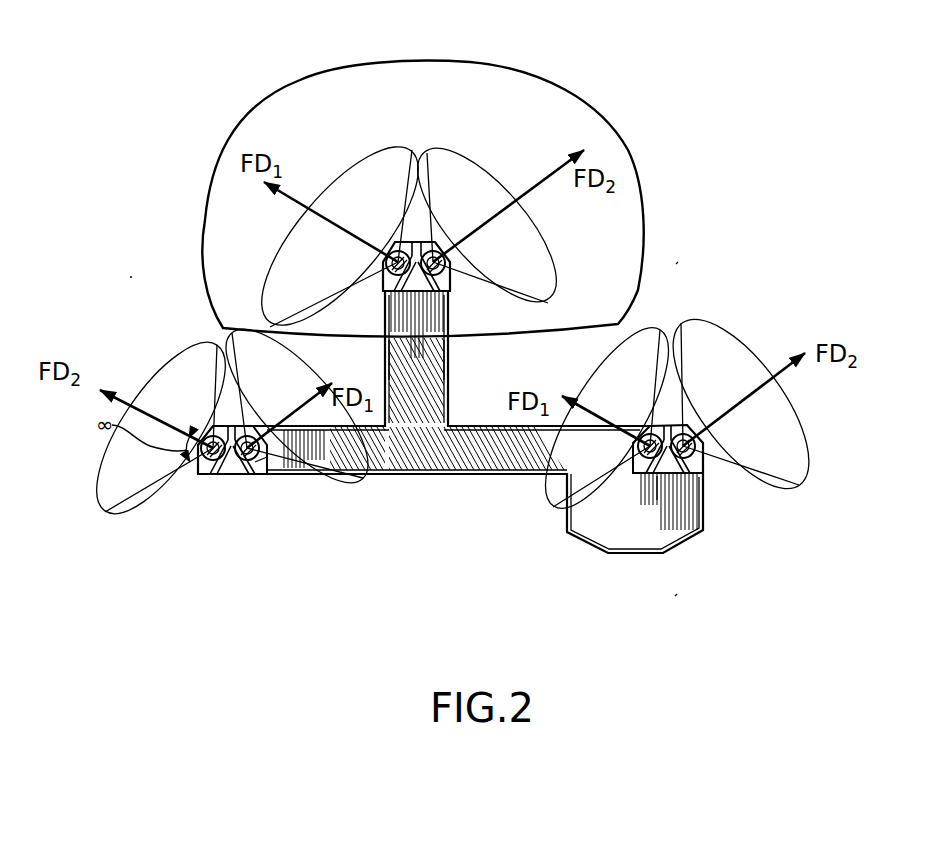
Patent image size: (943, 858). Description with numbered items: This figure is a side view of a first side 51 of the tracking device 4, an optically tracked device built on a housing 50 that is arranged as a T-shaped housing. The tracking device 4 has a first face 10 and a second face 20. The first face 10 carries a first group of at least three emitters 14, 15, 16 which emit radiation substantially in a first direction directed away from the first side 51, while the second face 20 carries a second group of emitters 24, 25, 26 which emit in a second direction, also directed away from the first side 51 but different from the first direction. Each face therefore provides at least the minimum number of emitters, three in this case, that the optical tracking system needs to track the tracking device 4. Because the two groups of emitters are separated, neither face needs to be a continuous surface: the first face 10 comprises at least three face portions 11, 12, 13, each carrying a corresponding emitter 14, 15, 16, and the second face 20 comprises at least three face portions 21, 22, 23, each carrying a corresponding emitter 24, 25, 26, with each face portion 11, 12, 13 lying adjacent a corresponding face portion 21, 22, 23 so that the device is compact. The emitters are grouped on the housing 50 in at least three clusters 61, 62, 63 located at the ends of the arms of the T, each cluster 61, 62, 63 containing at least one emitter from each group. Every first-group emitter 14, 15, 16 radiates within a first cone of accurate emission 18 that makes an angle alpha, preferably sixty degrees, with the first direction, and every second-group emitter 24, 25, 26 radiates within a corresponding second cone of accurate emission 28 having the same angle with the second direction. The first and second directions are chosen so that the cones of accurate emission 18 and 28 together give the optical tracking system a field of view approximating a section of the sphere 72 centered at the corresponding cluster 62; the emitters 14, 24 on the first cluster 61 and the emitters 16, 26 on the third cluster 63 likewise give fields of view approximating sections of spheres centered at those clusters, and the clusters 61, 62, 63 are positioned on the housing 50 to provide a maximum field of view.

The tracking device 4 is at (677, 602).
The first face 10 is at (128, 277).
The face portion 11 is at (208, 470).
The face portion 12 is at (392, 273).
The face portion 13 is at (648, 466).
The emitter 14 is at (222, 476).
The emitter 15 is at (394, 345).
The emitter 16 is at (657, 476).
The first cone of accurate emission 18 is at (372, 152).
The second face 20 is at (684, 259).
The face portion 21 is at (262, 470).
The face portion 22 is at (441, 270).
The face portion 23 is at (707, 469).
The emitter 24 is at (267, 457).
The emitter 25 is at (437, 347).
The emitter 26 is at (704, 514).
The second cone of accurate emission 28 is at (453, 152).
The housing 50 is at (336, 560).
The first side 51 is at (444, 464).
The first cluster 61 is at (115, 524).
The second cluster 62 is at (176, 206).
The third cluster 63 is at (602, 530).
The sphere 72 is at (570, 52).